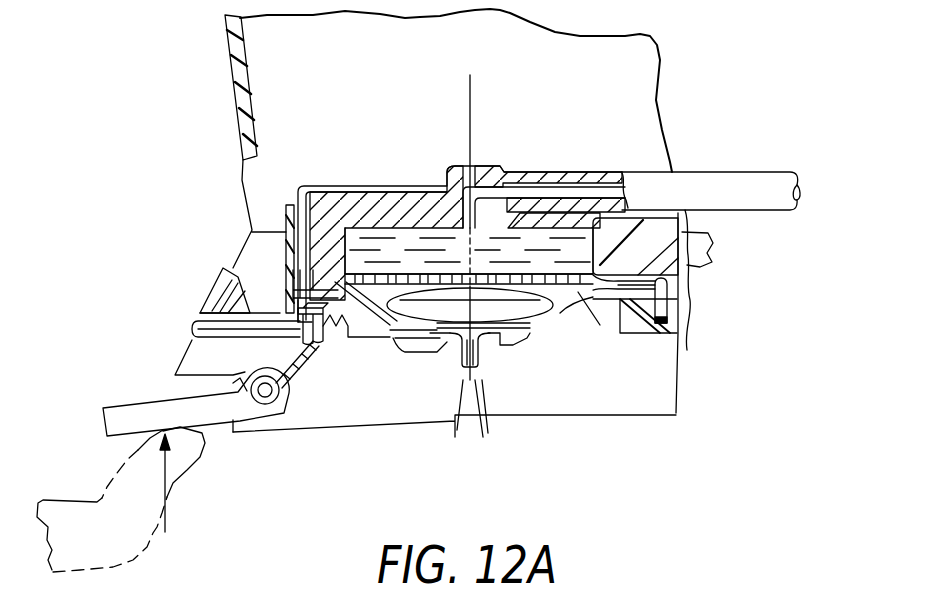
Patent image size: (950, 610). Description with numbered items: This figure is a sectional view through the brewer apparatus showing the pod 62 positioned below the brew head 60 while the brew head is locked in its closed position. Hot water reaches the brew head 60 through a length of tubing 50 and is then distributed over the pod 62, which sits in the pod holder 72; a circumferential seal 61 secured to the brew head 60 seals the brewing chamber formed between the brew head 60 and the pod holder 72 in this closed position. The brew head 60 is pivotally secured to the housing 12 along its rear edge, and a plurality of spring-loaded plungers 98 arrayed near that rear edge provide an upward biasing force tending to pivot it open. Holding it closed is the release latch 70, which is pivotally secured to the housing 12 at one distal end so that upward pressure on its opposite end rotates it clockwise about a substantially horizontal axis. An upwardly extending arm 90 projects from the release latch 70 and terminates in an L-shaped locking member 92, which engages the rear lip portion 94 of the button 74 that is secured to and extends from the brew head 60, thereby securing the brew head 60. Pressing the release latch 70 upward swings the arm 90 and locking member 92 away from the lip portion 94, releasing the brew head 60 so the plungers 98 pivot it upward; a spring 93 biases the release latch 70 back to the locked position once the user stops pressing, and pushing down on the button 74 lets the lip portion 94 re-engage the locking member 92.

The housing 12 is at (235, 93).
The length of tubing 50 is at (720, 173).
The brew head 60 is at (637, 253).
The circumferential seal 61 is at (662, 286).
The pod 62 is at (545, 313).
The release latch 70 is at (117, 412).
The pod holder 72 is at (578, 298).
The button 74 is at (198, 312).
The upwardly extending arm 90 is at (284, 368).
The locking member 92 is at (323, 343).
The spring 93 is at (338, 340).
The rear lip portion 94 is at (197, 318).
The spring-loaded plungers 98 is at (665, 288).